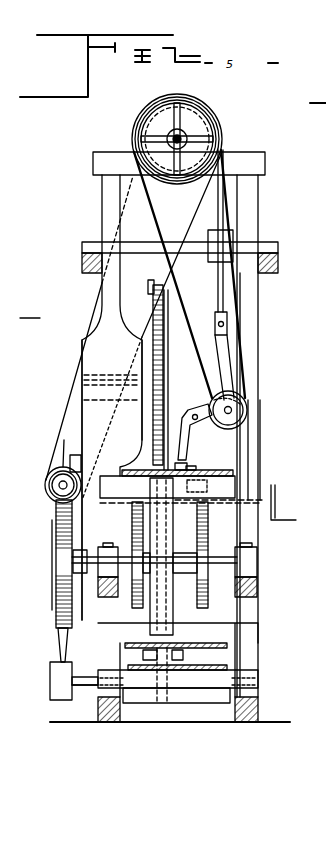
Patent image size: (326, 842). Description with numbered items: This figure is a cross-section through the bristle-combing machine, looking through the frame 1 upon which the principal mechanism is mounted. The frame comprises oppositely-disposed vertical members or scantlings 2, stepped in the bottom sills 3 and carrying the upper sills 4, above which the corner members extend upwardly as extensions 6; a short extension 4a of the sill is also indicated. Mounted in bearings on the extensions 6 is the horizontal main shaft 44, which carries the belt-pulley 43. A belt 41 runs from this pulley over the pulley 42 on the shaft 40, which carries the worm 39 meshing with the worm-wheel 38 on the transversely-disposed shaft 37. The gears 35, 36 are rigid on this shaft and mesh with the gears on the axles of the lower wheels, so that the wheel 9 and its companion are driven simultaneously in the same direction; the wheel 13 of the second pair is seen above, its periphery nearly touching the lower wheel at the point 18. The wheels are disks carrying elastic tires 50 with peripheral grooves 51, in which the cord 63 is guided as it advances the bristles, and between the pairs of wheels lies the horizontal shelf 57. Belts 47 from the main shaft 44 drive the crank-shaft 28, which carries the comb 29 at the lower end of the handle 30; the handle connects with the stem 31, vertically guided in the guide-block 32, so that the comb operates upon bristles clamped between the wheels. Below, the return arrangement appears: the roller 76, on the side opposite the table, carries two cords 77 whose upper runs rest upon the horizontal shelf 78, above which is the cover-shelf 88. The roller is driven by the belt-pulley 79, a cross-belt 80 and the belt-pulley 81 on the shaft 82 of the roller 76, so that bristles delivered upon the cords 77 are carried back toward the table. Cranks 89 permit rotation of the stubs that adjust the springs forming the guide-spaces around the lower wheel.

The frame 1 is at (262, 345).
The vertical members or scantlings 2 is at (100, 343).
The bottom sills 3 is at (110, 722).
The upper sills 4 is at (82, 265).
The cross bar extension 4a is at (21, 318).
The extensions 6 is at (102, 165).
The wheel 9 is at (160, 527).
The wheel 13 is at (165, 352).
The point 18 is at (190, 462).
The crank-shaft 28 is at (243, 428).
The comb 29 is at (192, 440).
The handle 30 is at (222, 345).
The stem 31 is at (224, 205).
The guide-block 32 is at (233, 234).
The gear 35 is at (208, 605).
The gear 36 is at (112, 598).
The transversely-disposed shaft 37 is at (258, 568).
The worm-wheel 38 is at (57, 585).
The worm 39 is at (60, 488).
The shaft 40 is at (50, 478).
The belt 41 is at (74, 387).
The pulley 42 is at (48, 466).
The belt-pulley 43 is at (145, 120).
The main shaft 44 is at (182, 134).
The belts 47 is at (160, 180).
The peripheral rims or tires 50 is at (166, 310).
The peripheral grooves 51 is at (150, 290).
The horizontal shelf 57 is at (225, 470).
The cord 63 is at (210, 463).
The roller or pulley 76 is at (208, 692).
The cords 77 is at (158, 703).
The horizontal shelf 78 is at (192, 672).
The belt-pulley 79 is at (56, 562).
The cross-belt 80 is at (58, 645).
The belt-pulley 81 is at (52, 680).
The shaft 82 is at (84, 685).
The cover-shelf 88 is at (292, 650).
The cranks 89 is at (288, 522).